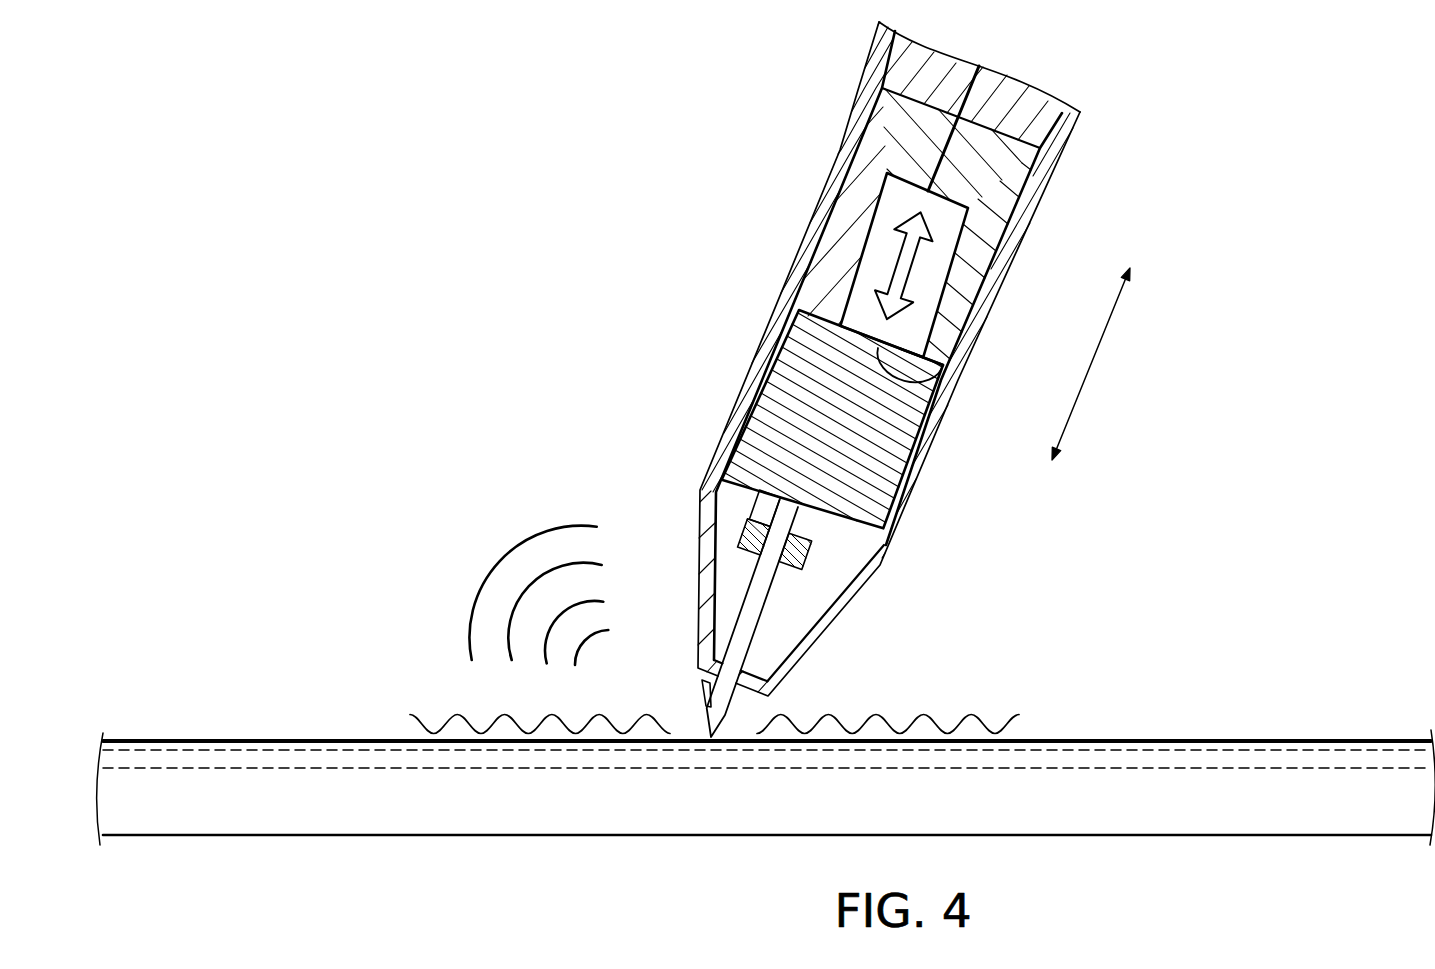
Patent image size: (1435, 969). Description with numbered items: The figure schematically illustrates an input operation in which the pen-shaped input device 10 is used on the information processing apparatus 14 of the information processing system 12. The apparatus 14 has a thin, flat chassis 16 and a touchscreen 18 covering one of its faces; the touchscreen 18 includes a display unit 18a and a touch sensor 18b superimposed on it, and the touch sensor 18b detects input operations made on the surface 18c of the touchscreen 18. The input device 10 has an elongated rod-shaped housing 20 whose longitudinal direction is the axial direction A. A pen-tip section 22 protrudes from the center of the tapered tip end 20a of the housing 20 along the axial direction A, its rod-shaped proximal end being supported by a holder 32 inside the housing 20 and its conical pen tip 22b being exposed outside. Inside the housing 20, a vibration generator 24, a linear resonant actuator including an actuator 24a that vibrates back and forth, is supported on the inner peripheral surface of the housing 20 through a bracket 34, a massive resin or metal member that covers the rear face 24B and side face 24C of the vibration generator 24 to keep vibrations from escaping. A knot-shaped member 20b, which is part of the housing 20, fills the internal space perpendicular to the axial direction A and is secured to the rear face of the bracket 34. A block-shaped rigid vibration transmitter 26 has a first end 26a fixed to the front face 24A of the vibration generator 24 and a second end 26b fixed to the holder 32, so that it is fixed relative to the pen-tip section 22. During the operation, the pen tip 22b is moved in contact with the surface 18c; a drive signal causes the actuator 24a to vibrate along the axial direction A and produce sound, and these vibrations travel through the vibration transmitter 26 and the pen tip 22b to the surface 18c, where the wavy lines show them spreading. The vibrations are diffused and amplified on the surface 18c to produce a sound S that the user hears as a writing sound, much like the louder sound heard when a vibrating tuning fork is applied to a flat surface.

The input device 10 is at (766, 124).
The information processing system 12 is at (225, 133).
The information processing apparatus 14 is at (203, 703).
The chassis 16 is at (354, 845).
The touchscreen 18 is at (1152, 724).
The display unit 18a is at (1297, 768).
The touch sensor 18b is at (1236, 749).
The surface 18c is at (334, 738).
The housing 20 is at (1069, 134).
The tip end 20a is at (807, 655).
The knot-shaped member 20b is at (905, 68).
The pen-tip section 22 is at (740, 734).
The pen tip 22b is at (788, 550).
The vibration generator 24 is at (860, 229).
The actuator 24a is at (952, 240).
The front face 24A is at (930, 357).
The rear face 24B is at (958, 186).
The side face 24C is at (934, 295).
The vibration transmitter 26 is at (750, 396).
The first end 26a is at (924, 338).
The second end 26b is at (876, 552).
The holder 32 is at (774, 516).
The bracket 34 is at (830, 261).
The sound S is at (481, 564).
The axial direction A is at (1091, 364).